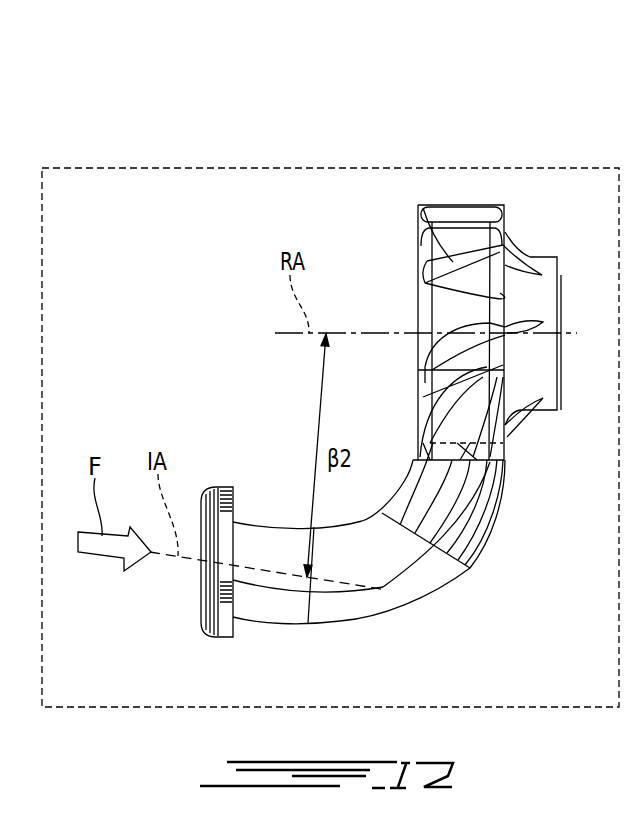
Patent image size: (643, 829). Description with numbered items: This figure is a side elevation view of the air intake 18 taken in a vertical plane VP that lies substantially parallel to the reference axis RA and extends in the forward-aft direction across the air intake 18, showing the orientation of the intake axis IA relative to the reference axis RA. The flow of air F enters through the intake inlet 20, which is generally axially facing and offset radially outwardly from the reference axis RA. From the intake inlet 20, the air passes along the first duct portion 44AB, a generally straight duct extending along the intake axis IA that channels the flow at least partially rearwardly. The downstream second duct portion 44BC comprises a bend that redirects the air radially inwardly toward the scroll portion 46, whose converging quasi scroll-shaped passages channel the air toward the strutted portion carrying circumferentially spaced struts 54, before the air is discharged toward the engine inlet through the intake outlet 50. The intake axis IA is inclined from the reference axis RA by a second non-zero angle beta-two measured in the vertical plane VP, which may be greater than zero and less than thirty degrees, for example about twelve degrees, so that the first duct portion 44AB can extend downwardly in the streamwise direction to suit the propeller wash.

The air intake 18 is at (176, 152).
The intake inlet 20 is at (200, 587).
The first duct portion 44AB is at (273, 607).
The second duct portion 44BC is at (360, 607).
The scroll portion 46 is at (390, 256).
The intake outlet 50 is at (560, 262).
The struts 54 is at (517, 262).